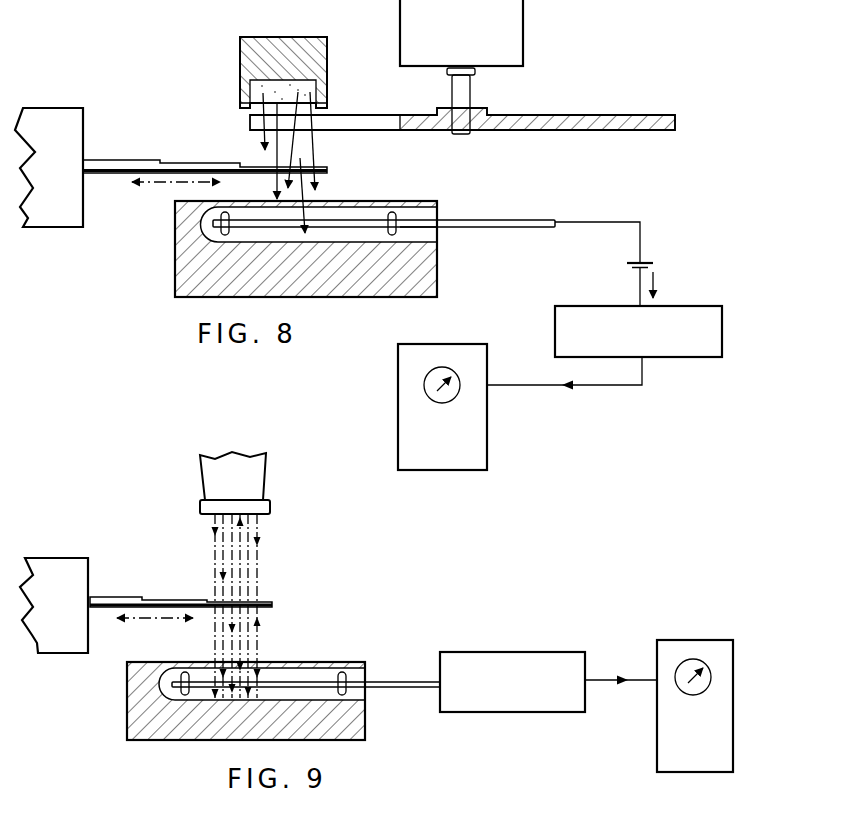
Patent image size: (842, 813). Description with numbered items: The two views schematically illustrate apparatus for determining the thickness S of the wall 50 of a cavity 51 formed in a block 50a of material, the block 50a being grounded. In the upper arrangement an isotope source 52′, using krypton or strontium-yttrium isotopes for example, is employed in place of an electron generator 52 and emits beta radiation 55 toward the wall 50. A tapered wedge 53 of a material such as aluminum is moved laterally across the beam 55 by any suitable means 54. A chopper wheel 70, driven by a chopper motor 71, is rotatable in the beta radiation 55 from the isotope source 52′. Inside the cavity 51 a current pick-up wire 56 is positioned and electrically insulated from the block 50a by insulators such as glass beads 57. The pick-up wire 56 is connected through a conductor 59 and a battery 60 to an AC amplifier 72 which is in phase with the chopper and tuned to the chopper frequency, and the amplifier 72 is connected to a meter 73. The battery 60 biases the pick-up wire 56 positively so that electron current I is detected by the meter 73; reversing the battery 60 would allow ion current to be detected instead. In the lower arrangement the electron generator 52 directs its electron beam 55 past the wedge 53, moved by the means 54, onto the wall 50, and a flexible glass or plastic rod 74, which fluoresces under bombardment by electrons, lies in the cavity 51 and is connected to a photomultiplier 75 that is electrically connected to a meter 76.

In FIG. 8, the wall 50 is at (336, 229).
In FIG. 9, the wall 50 is at (255, 704).
In FIG. 8, the block 50a is at (413, 271).
In FIG. 9, the block 50a is at (182, 728).
In FIG. 8, the cavity 51 is at (425, 213).
In FIG. 9, the cavity 51 is at (357, 676).
In FIG. 9, the electron generator 52 is at (262, 483).
In FIG. 8, the isotope source 52' is at (301, 72).
In FIG. 8, the tapered wedge 53 is at (148, 163).
In FIG. 9, the tapered wedge 53 is at (175, 600).
In FIG. 8, the means for moving wedge 54 is at (62, 116).
In FIG. 9, the means for moving wedge 54 is at (57, 567).
In FIG. 8, the electron beam 55 is at (263, 148).
In FIG. 9, the electron beam 55 is at (238, 577).
In FIG. 8, the current pick-up wire 56 is at (417, 228).
In FIG. 8, the glass beads 57 is at (387, 220).
In FIG. 8, the conductor 59 is at (613, 221).
In FIG. 8, the battery 60 is at (644, 262).
In FIG. 8, the chopper wheel 70 is at (568, 116).
In FIG. 8, the chopper motor 71 is at (503, 42).
In FIG. 8, the AC amplifier 72 is at (703, 311).
In FIG. 8, the meter 73 is at (407, 408).
In FIG. 9, the flexible glass or plastic rod 74 is at (290, 682).
In FIG. 9, the photomultiplier 75 is at (525, 652).
In FIG. 9, the meter 76 is at (687, 647).